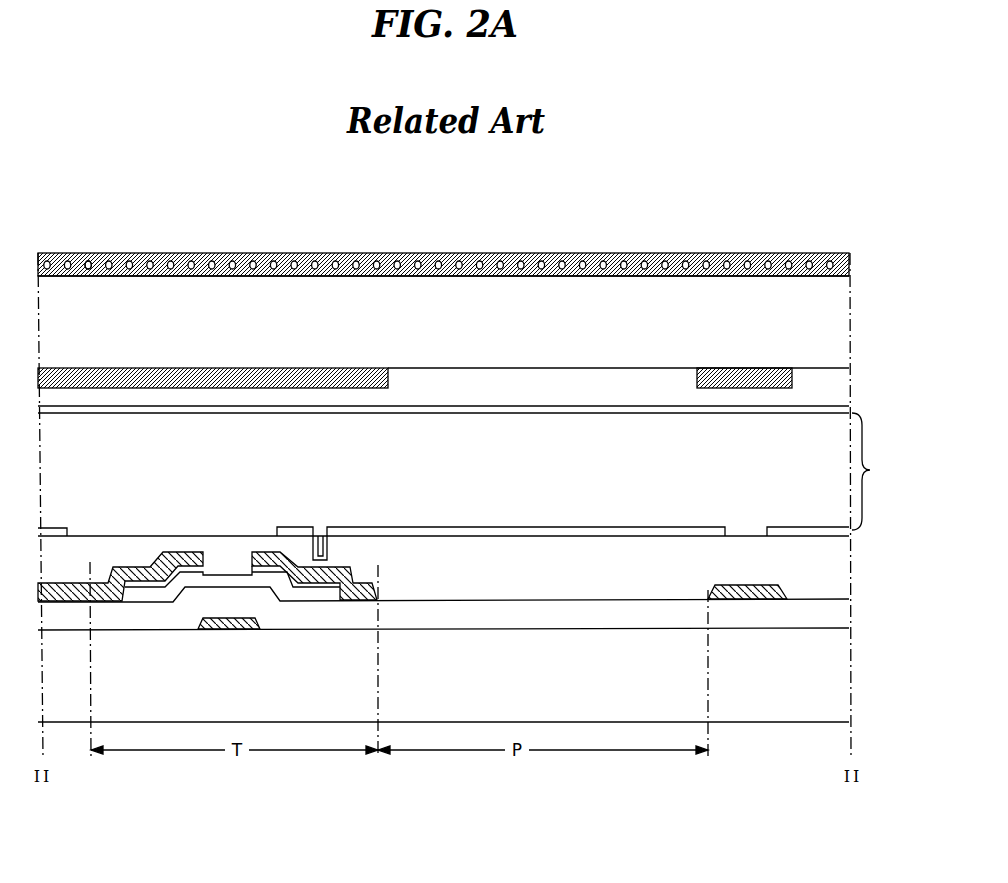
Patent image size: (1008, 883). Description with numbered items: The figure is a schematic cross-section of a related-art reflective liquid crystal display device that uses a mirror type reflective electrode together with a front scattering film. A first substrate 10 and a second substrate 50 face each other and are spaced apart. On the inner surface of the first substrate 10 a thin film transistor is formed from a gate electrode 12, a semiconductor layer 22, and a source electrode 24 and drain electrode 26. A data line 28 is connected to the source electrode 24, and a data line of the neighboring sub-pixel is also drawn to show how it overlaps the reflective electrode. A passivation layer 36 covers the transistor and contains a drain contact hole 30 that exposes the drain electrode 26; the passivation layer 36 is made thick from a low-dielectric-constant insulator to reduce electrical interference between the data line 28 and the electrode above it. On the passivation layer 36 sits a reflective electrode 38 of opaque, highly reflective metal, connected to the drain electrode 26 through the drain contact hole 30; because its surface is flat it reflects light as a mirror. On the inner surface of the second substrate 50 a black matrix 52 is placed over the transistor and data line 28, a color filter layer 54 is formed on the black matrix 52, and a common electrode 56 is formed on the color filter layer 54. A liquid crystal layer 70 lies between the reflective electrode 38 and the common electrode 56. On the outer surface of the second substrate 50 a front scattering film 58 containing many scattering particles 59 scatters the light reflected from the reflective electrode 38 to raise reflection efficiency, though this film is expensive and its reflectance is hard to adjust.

The first substrate 10 is at (408, 694).
The gate electrode 12 is at (228, 630).
The semiconductor layer 22 is at (130, 590).
The source electrode 24 is at (185, 553).
The drain electrode 26 is at (265, 553).
The data line 28 is at (75, 583).
The drain contact hole 30 is at (320, 508).
The passivation layer 36 is at (112, 548).
The reflective electrode 38 is at (62, 528).
The second substrate 50 is at (410, 337).
The black matrix 52 is at (205, 368).
The color filter layer 54 is at (568, 380).
The common electrode 56 is at (660, 408).
The front scattering film 58 is at (407, 252).
The scattering particles 59 is at (94, 252).
The liquid crystal layer 70 is at (878, 471).